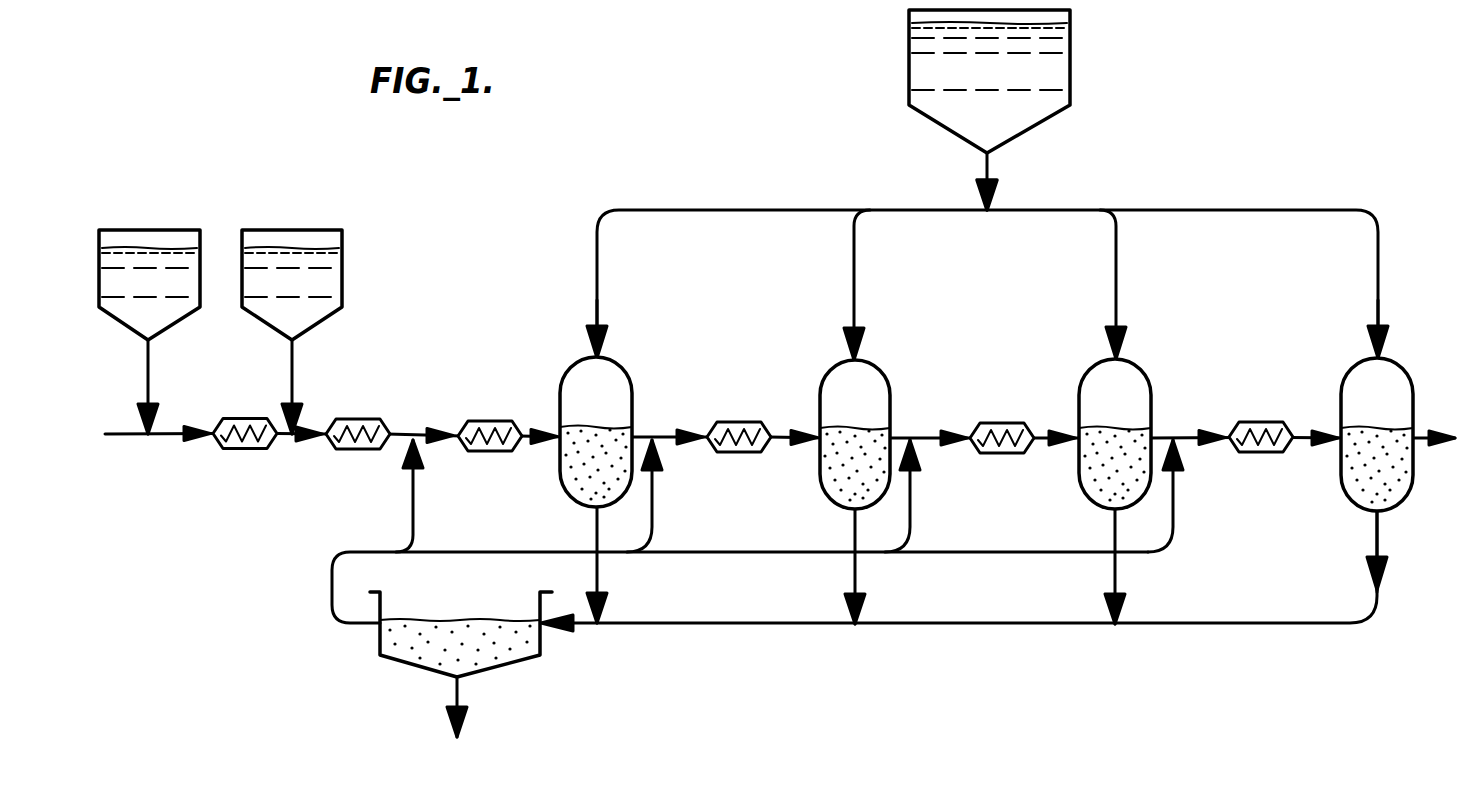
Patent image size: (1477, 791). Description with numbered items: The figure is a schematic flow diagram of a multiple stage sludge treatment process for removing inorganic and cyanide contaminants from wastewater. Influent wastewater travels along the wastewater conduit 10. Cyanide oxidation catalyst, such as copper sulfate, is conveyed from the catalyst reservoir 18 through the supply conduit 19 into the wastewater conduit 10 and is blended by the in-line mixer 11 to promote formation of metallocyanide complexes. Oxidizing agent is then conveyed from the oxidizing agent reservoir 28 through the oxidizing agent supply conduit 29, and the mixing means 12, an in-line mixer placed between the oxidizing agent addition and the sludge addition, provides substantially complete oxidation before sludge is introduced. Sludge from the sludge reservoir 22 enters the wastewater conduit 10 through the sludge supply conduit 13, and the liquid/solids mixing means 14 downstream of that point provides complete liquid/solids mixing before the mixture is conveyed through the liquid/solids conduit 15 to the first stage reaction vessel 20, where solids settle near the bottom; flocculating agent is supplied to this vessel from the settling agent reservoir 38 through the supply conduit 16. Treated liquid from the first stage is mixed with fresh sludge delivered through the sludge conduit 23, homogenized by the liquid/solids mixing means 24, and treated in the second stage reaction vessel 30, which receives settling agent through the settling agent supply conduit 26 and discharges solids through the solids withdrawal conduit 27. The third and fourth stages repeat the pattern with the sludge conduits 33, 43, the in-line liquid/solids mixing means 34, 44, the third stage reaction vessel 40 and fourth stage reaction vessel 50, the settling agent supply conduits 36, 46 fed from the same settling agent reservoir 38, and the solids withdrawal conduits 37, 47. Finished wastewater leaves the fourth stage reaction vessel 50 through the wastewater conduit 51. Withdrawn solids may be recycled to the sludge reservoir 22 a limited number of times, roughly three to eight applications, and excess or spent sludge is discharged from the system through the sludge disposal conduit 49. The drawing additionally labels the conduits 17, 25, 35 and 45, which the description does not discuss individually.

The wastewater conduit 10 is at (128, 434).
The in-line mixer 11 is at (233, 419).
The mixing means 12 is at (353, 420).
The sludge supply conduit 13 is at (411, 488).
The liquid/solids mixing means 14 is at (473, 422).
The liquid/solids conduit 15 is at (522, 444).
The supply conduit 16 is at (599, 312).
The discharge conduit 17 is at (599, 580).
The catalyst reservoir 18 is at (175, 237).
The supply conduit 19 is at (150, 375).
The first stage reaction vessel 20 is at (620, 366).
The sludge reservoir 22 is at (543, 645).
The sludge conduit 23 is at (654, 520).
The liquid/solids mixing means 24 is at (722, 421).
The conduit 25 is at (773, 439).
The settling agent supply conduit 26 is at (856, 313).
The solids withdrawal conduit 27 is at (857, 582).
The oxidizing agent reservoir 28 is at (325, 237).
The oxidizing agent supply conduit 29 is at (294, 372).
The second stage reaction vessel 30 is at (880, 368).
The sludge conduit 33 is at (912, 522).
The liquid/solids mixing means 34 is at (988, 421).
The conduit 35 is at (1037, 449).
The settling agent supply conduit 36 is at (1118, 300).
The solids withdrawal conduit 37 is at (1118, 585).
The settling agent reservoir 38 is at (1072, 75).
The third stage reaction vessel 40 is at (1140, 366).
The sludge conduit 43 is at (1175, 532).
The liquid/solids mixing means 44 is at (1247, 422).
The conduit 45 is at (1296, 449).
The settling agent supply conduit 46 is at (1380, 313).
The solids withdrawal conduit 47 is at (1379, 545).
The sludge disposal conduit 49 is at (460, 690).
The fourth stage reaction vessel 50 is at (1398, 362).
The wastewater conduit 51 is at (1417, 441).